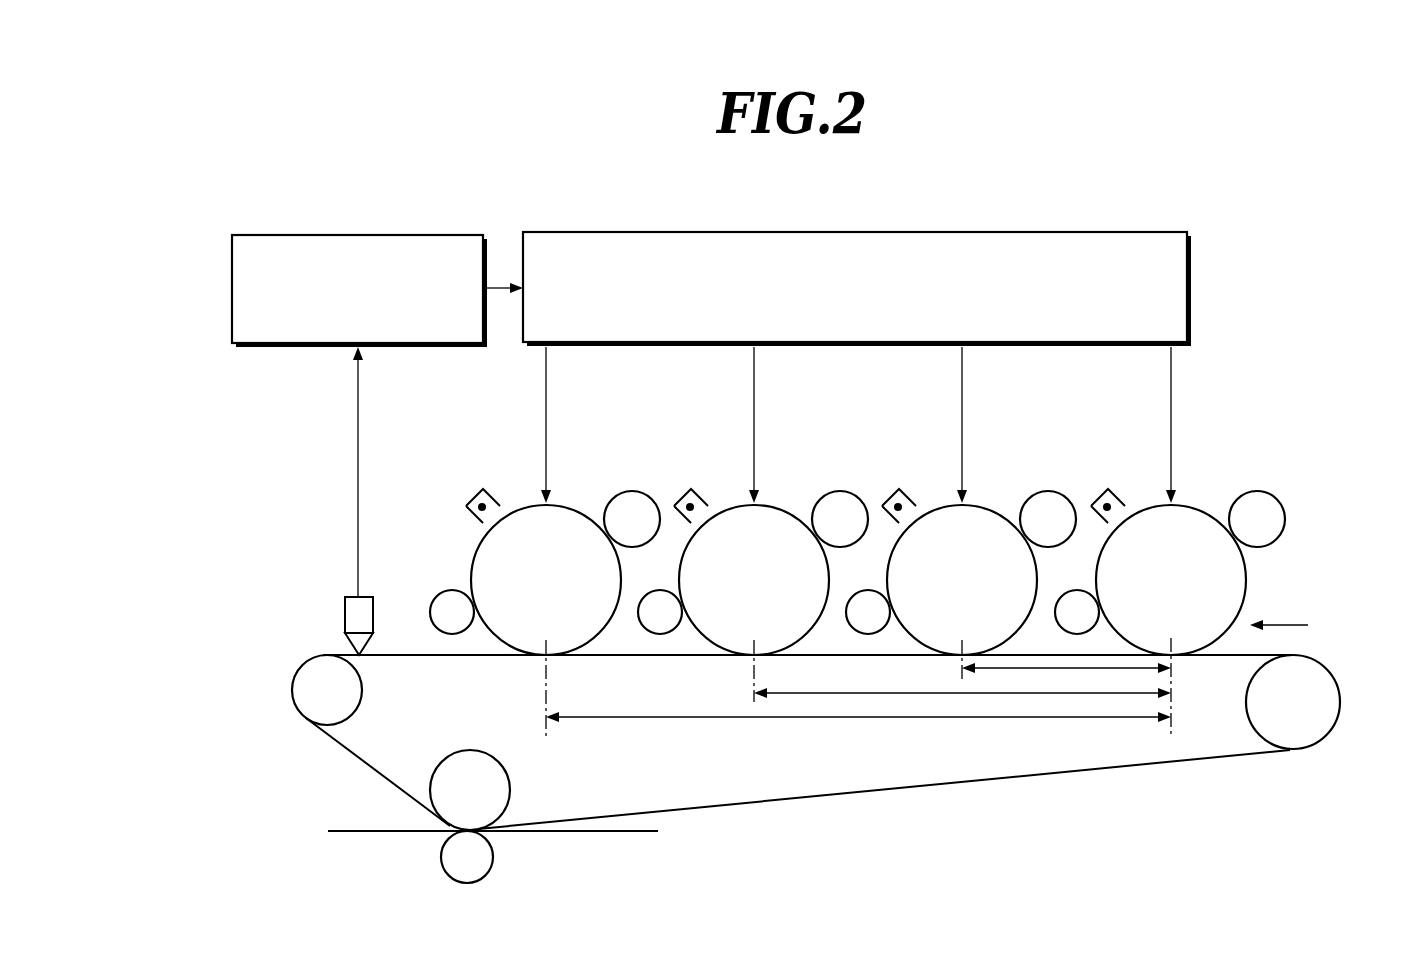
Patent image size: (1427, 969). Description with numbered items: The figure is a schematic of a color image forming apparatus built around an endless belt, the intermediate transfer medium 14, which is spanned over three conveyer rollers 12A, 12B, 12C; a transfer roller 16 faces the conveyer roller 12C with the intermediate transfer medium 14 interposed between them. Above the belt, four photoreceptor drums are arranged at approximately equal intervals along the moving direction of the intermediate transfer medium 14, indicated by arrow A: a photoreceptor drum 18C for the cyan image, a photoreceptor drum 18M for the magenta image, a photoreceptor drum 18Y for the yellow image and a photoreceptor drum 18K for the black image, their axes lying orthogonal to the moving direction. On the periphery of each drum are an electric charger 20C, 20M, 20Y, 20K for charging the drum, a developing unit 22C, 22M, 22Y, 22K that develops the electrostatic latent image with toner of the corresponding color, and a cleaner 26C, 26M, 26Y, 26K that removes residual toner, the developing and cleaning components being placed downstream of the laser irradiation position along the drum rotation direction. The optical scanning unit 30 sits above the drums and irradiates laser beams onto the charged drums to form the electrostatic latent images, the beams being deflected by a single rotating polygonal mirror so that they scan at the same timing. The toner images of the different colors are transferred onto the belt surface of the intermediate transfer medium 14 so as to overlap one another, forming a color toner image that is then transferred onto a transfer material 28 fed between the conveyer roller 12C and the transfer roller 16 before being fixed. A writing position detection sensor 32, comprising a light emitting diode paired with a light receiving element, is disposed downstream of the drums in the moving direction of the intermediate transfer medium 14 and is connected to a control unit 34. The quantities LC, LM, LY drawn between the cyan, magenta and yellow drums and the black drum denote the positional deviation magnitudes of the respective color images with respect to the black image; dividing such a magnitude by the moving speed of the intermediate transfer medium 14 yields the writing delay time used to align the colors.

The optical scanning unit 30 is at (652, 232).
The control unit 34 is at (380, 233).
The photoreceptor drum 18C is at (557, 512).
The photoreceptor drum 18M is at (765, 512).
The photoreceptor drum 18Y is at (973, 512).
The photoreceptor drum 18K is at (1182, 512).
The electric charger 20C is at (499, 498).
The electric charger 20M is at (707, 498).
The electric charger 20Y is at (915, 498).
The electric charger 20K is at (1124, 498).
The developing unit 22C is at (632, 491).
The developing unit 22M is at (840, 491).
The developing unit 22Y is at (1048, 491).
The developing unit 22K is at (1257, 491).
The cleaner 26C is at (452, 590).
The cleaner 26M is at (660, 590).
The cleaner 26Y is at (868, 590).
The cleaner 26K is at (1077, 590).
The intermediate transfer medium 14 is at (1103, 766).
The conveyer roller 12A is at (1308, 732).
The conveyer roller 12B is at (300, 700).
The conveyer roller 12C is at (440, 775).
The transfer roller 16 is at (480, 872).
The transfer material 28 is at (638, 832).
The writing position detection sensor 32 is at (345, 625).
The moving direction A is at (1283, 620).
The positional deviation magnitude LC is at (713, 718).
The positional deviation magnitude LM is at (856, 694).
The positional deviation magnitude LY is at (1050, 670).